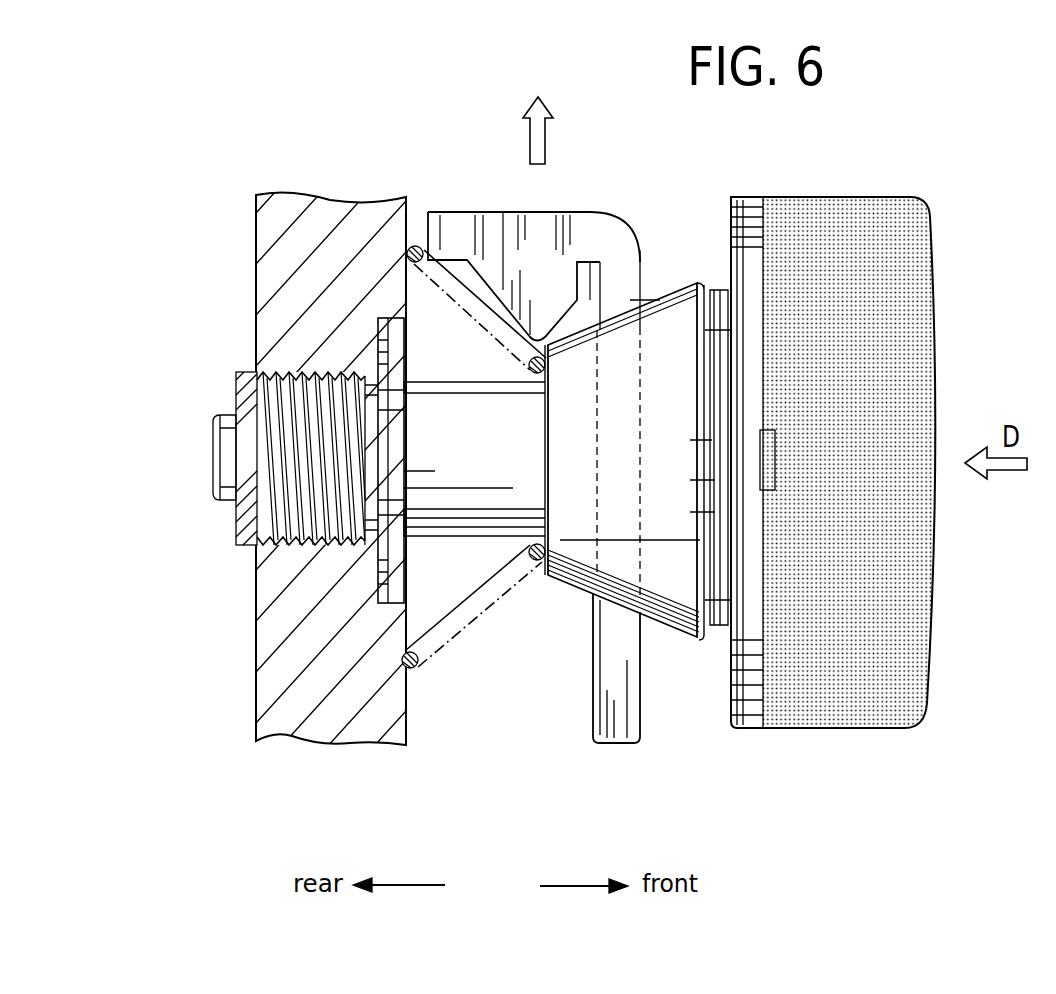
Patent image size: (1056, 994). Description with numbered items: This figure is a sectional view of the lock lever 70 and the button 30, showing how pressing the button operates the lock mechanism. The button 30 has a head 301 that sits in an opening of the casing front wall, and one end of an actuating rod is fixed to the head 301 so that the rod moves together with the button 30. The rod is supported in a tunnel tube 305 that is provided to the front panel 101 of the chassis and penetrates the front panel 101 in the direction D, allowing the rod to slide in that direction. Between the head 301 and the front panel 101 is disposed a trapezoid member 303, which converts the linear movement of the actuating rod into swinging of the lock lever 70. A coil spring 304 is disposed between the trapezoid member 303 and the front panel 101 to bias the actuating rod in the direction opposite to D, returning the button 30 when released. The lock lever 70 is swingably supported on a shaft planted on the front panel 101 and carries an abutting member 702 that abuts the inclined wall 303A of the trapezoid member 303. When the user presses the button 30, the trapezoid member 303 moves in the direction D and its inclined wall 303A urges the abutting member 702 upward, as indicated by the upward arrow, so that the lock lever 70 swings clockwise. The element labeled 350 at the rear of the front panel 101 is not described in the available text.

The front panel 101 is at (265, 282).
The nut 350 is at (226, 457).
The tunnel tube 305 is at (455, 483).
The coil spring 304 is at (420, 668).
The lock lever 70 is at (565, 462).
The abutting member 702 is at (517, 240).
The trapezoid member 303 is at (664, 575).
The inclined wall 303A is at (580, 325).
The button 30 is at (871, 490).
The head 301 is at (920, 706).